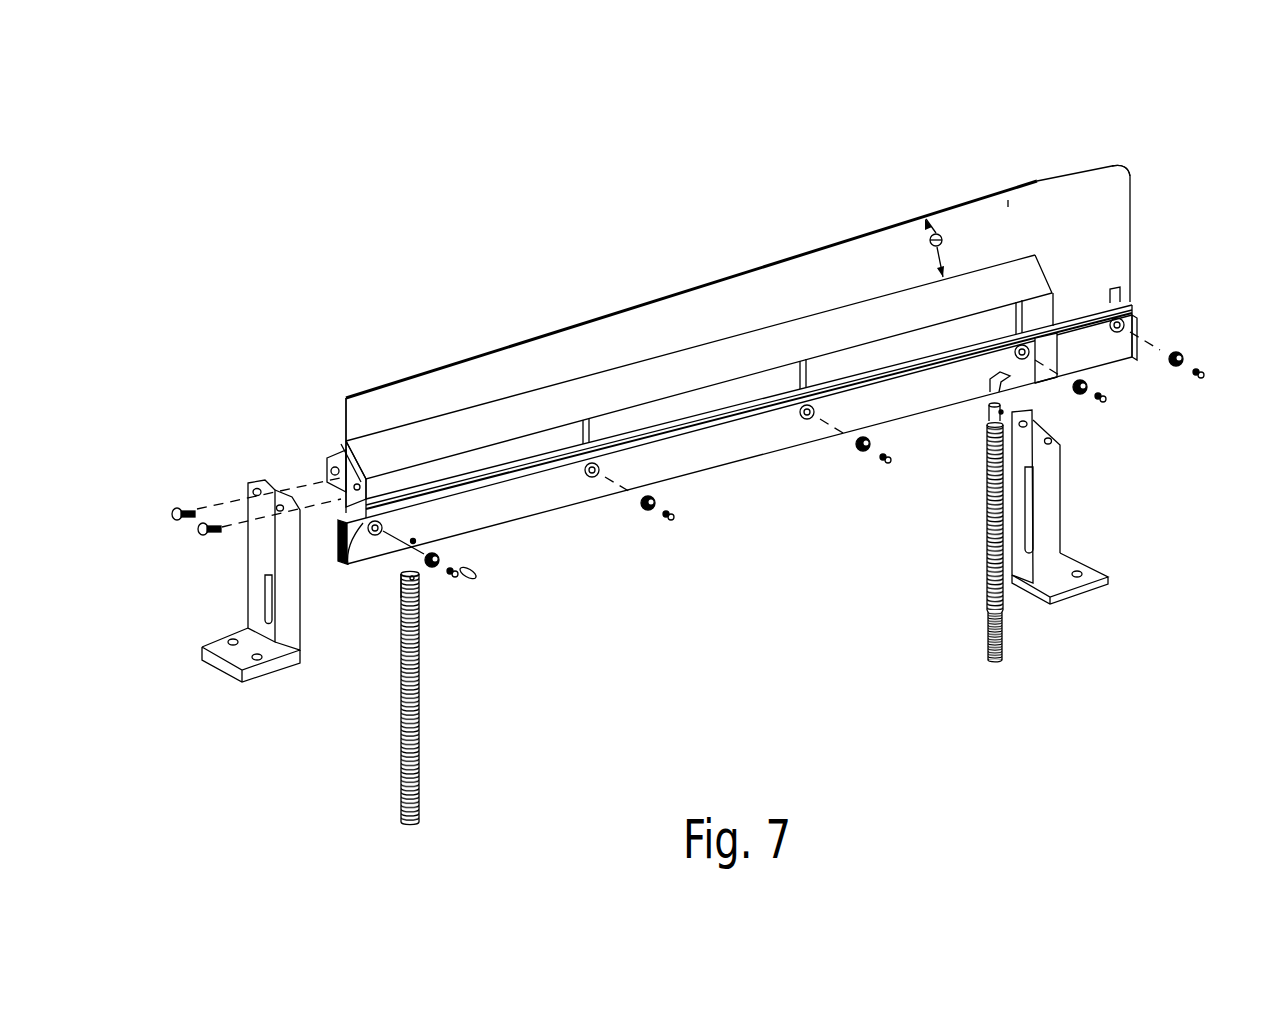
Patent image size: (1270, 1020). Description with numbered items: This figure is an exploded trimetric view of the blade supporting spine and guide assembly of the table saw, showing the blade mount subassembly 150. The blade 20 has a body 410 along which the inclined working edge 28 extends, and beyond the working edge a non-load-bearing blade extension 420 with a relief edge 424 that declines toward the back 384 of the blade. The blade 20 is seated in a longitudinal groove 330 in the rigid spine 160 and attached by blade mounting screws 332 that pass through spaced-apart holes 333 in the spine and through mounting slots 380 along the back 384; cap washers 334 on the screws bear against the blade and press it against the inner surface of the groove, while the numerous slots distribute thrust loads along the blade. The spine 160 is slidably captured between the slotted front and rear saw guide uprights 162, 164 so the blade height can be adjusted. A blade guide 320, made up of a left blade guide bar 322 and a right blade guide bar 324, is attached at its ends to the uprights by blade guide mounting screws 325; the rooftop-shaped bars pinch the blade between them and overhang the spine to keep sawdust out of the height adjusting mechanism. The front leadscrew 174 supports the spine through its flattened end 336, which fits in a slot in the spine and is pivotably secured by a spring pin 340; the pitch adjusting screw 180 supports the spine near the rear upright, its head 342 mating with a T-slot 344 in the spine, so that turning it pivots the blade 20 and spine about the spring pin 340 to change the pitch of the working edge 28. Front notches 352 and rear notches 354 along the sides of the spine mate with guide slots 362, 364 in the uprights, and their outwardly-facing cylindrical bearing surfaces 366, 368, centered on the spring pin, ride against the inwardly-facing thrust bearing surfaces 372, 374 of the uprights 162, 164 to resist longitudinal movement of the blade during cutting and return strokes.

The blade 20 is at (1008, 207).
The working edge 28 is at (910, 216).
The blade mount subassembly 150 is at (1183, 518).
The spine 160 is at (728, 448).
The front saw guide upright 162 is at (276, 598).
The rear saw guide upright 164 is at (1094, 527).
The front leadscrew 174 is at (422, 697).
The pitch adjusting screw 180 is at (992, 560).
The blade guide 320 is at (296, 436).
The left blade guide bar 322 is at (337, 456).
The right blade guide bar 324 is at (1025, 287).
The blade guide mounting screws 325 is at (203, 522).
The longitudinal groove 330 is at (1132, 312).
The blade mounting screws 332 is at (449, 576).
The holes 333 is at (585, 468).
The cap washers 334 is at (435, 548).
The flattened end 336 is at (398, 603).
The spring pin 340 is at (478, 583).
The head 342 is at (413, 540).
The T-slot 344 is at (990, 380).
The front notches 352 is at (338, 511).
The rear notches 354 is at (1048, 340).
The guide slot 362 is at (267, 597).
The guide slot 364 is at (1030, 485).
The cylindrical bearing surface 366 is at (360, 532).
The cylindrical bearing surface 368 is at (1047, 373).
The thrust bearing surface 372 is at (304, 623).
The thrust bearing surface 374 is at (1040, 512).
The slots 380 is at (1118, 302).
The back 384 is at (1090, 292).
The body 410 is at (846, 297).
The blade extension 420 is at (1040, 207).
The relief edge 424 is at (1108, 164).